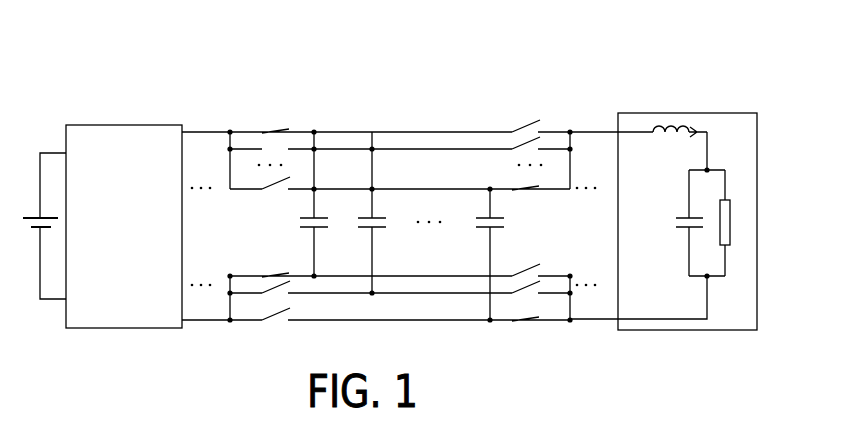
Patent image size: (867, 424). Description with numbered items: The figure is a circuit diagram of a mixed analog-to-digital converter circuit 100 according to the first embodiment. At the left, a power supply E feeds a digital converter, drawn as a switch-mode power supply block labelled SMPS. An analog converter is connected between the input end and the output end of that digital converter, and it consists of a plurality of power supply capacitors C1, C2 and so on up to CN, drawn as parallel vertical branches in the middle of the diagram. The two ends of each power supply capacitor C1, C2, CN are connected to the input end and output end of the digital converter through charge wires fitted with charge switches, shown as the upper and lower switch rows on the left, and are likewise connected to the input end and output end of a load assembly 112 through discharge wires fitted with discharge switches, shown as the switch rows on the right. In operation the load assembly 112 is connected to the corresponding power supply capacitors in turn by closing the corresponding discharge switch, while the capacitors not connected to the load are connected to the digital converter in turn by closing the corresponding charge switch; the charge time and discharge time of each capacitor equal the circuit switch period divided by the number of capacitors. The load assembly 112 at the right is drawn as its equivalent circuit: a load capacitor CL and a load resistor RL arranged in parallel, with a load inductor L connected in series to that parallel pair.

The mixed analog-to-digital converter circuit 100 is at (731, 41).
The load assembly 112 is at (648, 113).
The power supply E is at (40, 226).
The load inductor L is at (680, 142).
The load capacitor CL is at (675, 223).
The load resistor RL is at (736, 223).
The power supply capacitor C1 is at (300, 204).
The power supply capacitor C2 is at (364, 212).
The power supply capacitor CN is at (482, 254).